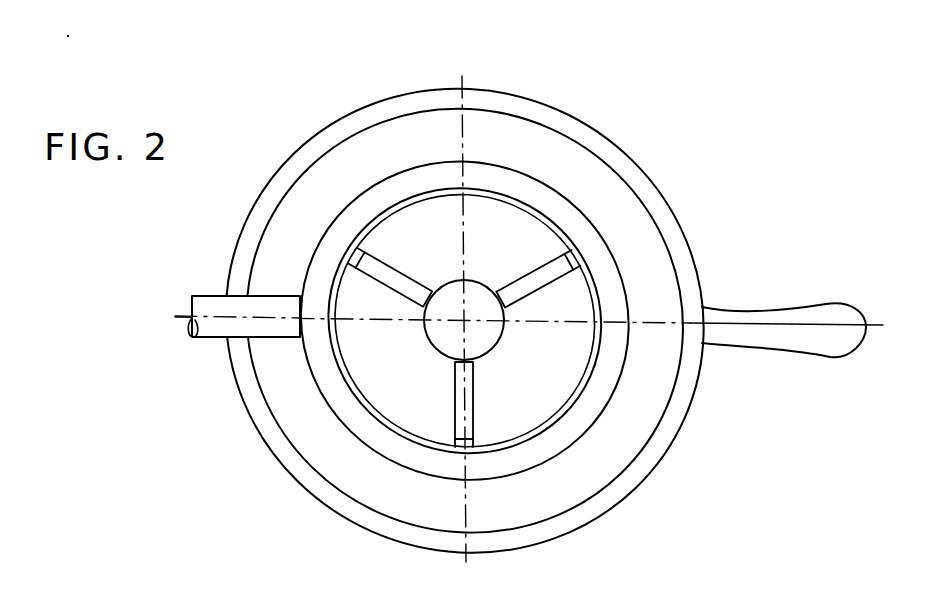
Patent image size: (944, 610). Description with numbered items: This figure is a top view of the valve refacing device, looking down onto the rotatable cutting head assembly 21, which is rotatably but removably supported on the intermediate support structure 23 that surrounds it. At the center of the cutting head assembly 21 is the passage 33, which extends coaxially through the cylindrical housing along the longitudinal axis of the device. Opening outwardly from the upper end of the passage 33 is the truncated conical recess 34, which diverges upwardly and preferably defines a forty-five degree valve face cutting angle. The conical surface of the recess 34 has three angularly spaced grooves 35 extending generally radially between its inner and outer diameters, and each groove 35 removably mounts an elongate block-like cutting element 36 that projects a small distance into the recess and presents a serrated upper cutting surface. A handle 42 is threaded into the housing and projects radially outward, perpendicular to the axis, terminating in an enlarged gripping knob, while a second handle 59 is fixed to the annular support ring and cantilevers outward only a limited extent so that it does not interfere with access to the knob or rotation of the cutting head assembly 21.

The cutting head assembly 21 is at (337, 421).
The intermediate support structure 23 is at (323, 134).
The passage 33 is at (450, 337).
The truncated conical recess 34 is at (480, 204).
The grooves 35 is at (535, 274).
The cutting element 36 is at (383, 267).
The handle 42 is at (203, 295).
The handle 59 is at (770, 307).